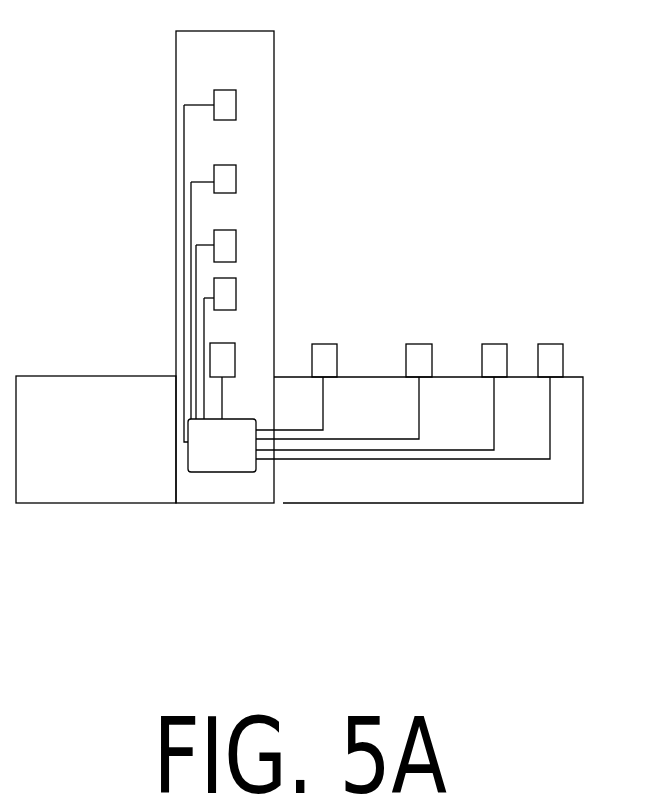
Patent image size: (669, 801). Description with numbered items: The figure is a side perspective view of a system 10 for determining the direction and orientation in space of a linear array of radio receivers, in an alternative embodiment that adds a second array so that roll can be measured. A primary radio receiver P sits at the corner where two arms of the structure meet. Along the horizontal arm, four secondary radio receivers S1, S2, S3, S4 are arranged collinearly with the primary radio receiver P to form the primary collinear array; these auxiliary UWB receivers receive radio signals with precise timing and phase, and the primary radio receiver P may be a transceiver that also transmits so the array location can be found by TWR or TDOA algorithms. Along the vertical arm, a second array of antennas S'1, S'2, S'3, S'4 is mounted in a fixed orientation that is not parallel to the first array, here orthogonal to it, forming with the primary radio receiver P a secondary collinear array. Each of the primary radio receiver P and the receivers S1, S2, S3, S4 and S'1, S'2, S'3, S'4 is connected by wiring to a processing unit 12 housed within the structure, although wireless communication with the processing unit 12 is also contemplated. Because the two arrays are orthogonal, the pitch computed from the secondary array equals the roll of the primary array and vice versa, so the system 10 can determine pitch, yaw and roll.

The system 10 is at (137, 326).
The processing unit 12 is at (220, 453).
The primary radio receiver P is at (223, 347).
The secondary radio receiver S1 is at (322, 350).
The secondary radio receiver S2 is at (417, 350).
The secondary radio receiver S3 is at (495, 350).
The secondary radio receiver S4 is at (553, 350).
The second array antenna S'1 is at (154, 243).
The second array antenna S'2 is at (290, 212).
The second array antenna S'3 is at (154, 148).
The second array antenna S'4 is at (277, 99).